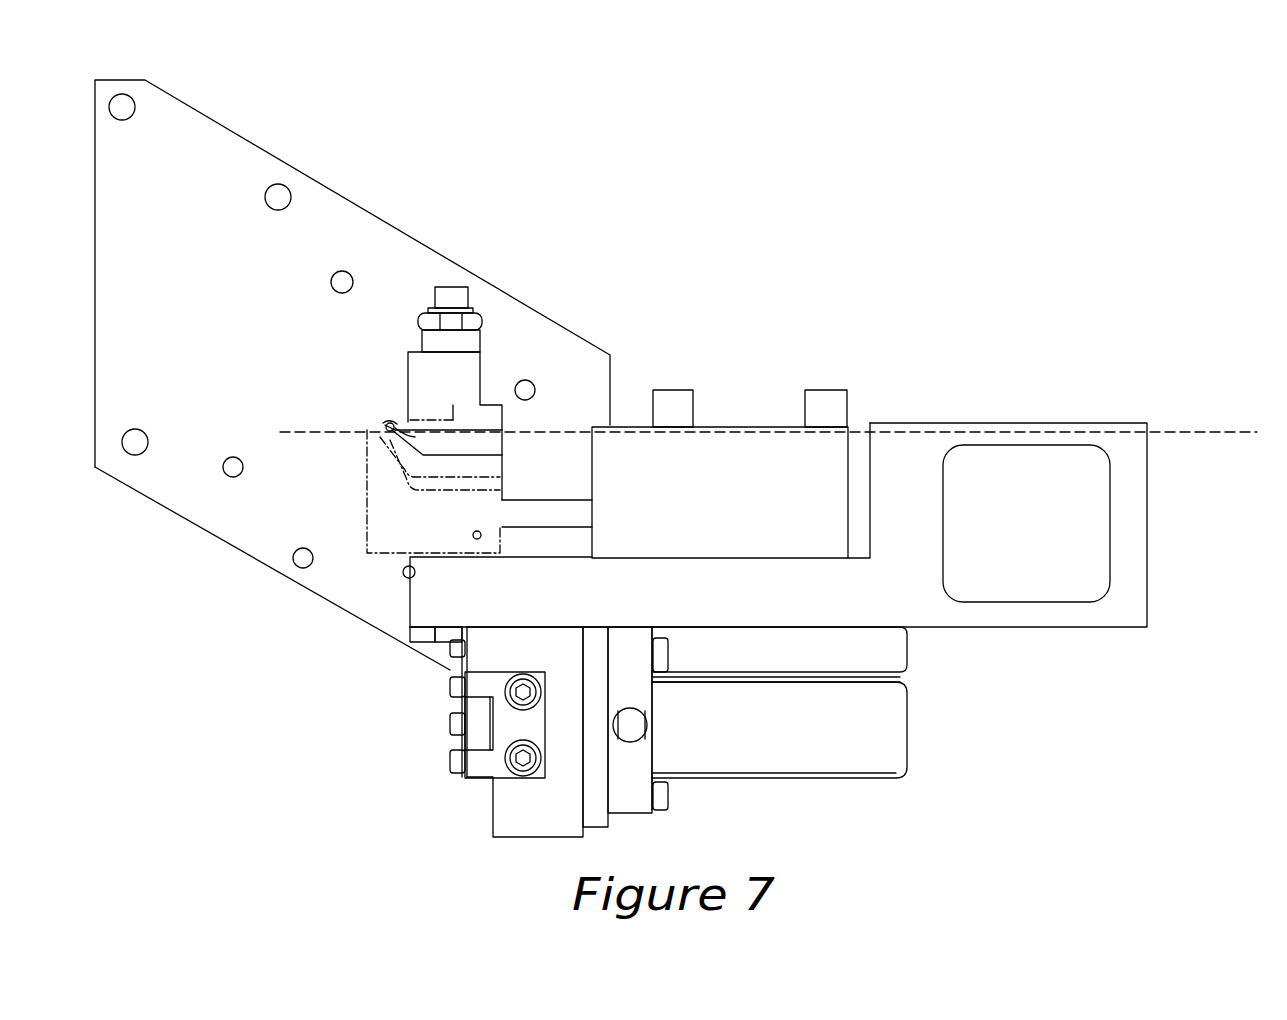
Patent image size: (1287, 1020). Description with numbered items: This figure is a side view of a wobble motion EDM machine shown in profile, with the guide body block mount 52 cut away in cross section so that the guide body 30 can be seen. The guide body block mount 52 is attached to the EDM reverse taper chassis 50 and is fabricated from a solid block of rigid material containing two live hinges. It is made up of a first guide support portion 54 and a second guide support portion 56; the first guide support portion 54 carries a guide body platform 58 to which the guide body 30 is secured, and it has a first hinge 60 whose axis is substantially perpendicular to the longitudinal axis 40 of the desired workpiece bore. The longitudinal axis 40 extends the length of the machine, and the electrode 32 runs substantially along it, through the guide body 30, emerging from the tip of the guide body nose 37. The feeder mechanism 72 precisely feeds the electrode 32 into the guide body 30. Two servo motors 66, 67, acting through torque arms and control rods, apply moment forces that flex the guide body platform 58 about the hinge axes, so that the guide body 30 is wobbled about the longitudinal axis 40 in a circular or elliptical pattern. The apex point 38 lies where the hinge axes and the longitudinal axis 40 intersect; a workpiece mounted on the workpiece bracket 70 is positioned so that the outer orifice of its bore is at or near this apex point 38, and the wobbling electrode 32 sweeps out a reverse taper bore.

The guide body 30 is at (495, 407).
The electrode 32 is at (548, 428).
The guide body nose 37 is at (392, 423).
The apex point 38 is at (386, 423).
The longitudinal axis of desired workpiece bore 40 is at (305, 435).
The EDM reverse taper chassis 50 is at (1098, 618).
The guide body block mount 52 is at (358, 508).
The first guide support portion 54 is at (495, 473).
The second guide support portion 56 is at (368, 550).
The guide body platform 58 is at (495, 470).
The first hinge 60 is at (380, 423).
The servo motor 66 is at (896, 733).
The servo motor 67 is at (896, 651).
The workpiece bracket 70 is at (242, 155).
The feeder mechanism 72 is at (737, 401).